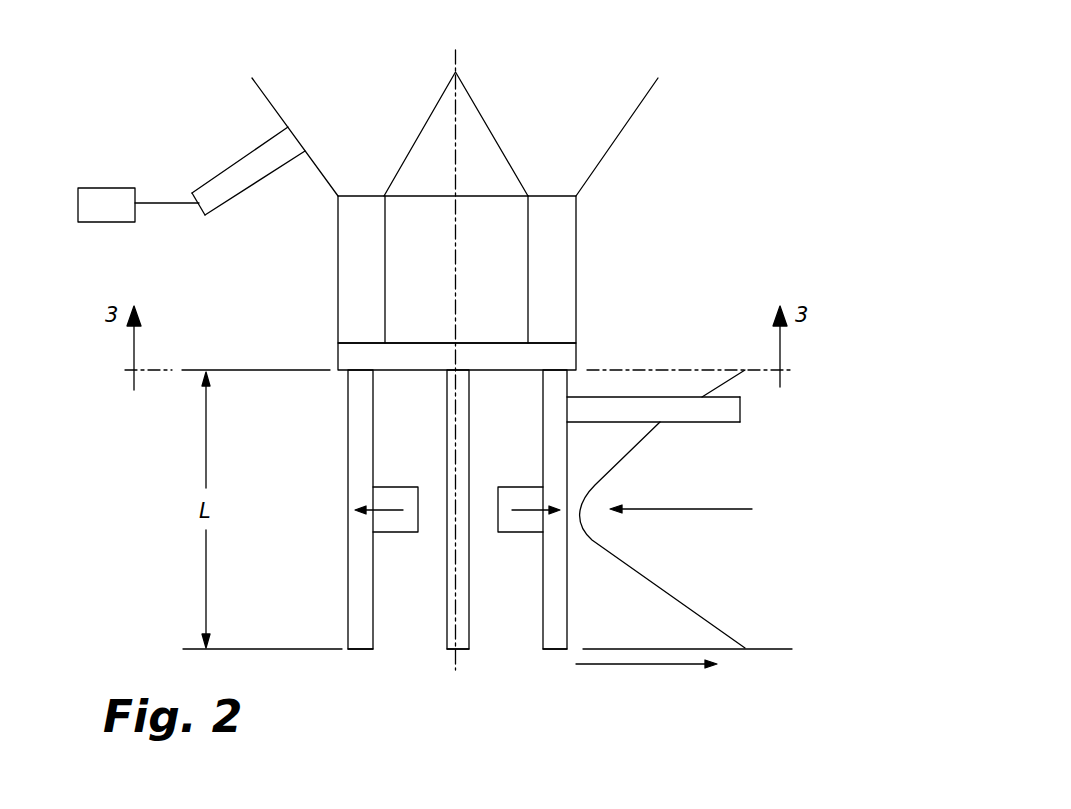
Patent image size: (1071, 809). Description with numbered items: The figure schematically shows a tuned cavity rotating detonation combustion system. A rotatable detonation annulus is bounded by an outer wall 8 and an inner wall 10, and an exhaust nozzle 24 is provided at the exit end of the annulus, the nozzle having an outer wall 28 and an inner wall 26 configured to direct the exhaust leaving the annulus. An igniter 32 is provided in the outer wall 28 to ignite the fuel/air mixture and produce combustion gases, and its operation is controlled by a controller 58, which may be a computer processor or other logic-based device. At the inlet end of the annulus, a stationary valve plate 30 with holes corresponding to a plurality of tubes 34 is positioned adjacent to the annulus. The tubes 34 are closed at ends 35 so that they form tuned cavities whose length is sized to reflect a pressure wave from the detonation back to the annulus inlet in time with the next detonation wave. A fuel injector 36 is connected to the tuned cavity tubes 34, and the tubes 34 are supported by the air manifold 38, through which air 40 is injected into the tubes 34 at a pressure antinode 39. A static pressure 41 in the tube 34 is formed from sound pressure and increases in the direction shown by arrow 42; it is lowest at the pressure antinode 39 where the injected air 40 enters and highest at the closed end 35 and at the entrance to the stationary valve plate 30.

The outer wall 8 is at (505, 269).
The inner wall 10 is at (578, 228).
The exhaust nozzle 24 is at (472, 185).
The inner wall 26 is at (480, 111).
The outer wall 28 is at (622, 132).
The stationary valve plate 30 is at (580, 350).
The igniter 32 is at (200, 218).
The tubes 34 is at (447, 398).
The closed ends 35 is at (358, 652).
The fuel injector 36 is at (740, 422).
The air manifold 38 is at (408, 533).
The pressure antinode 39 is at (690, 509).
The air 40 is at (390, 510).
The static pressure 41 is at (672, 600).
The arrow 42 is at (640, 665).
The controller 58 is at (136, 188).